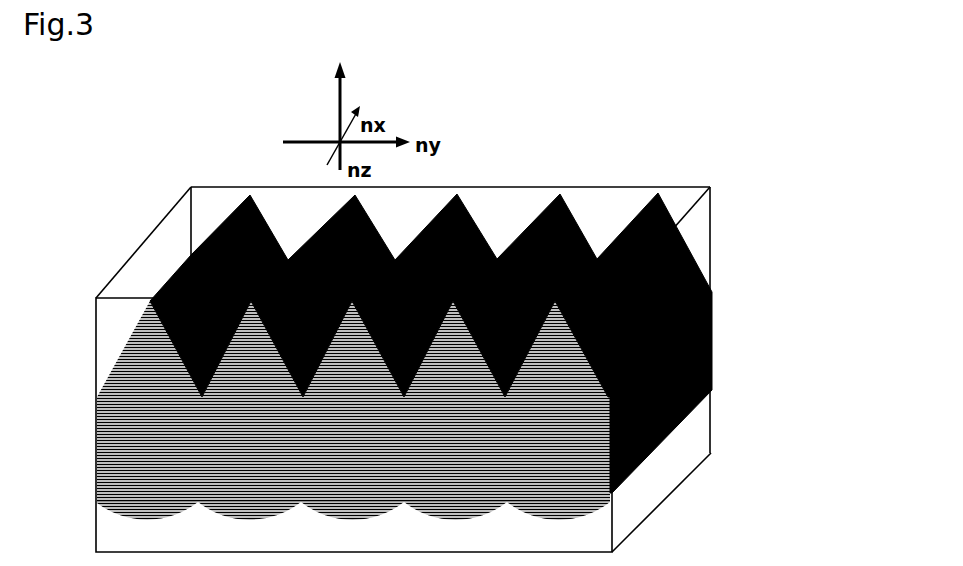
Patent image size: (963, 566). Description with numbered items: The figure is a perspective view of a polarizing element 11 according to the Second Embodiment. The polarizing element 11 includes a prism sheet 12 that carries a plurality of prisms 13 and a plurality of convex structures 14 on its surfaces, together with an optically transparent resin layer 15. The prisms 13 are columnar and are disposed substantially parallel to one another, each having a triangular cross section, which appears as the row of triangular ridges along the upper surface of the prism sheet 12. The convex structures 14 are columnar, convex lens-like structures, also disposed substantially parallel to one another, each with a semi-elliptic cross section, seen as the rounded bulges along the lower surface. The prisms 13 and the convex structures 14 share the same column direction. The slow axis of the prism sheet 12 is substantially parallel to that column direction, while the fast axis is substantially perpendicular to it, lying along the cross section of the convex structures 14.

The polarizing element 11 is at (689, 168).
The prism sheet 12 is at (712, 350).
The prisms 13 is at (705, 273).
The convex structures 14 is at (610, 493).
The optically transparent resin layer 15 is at (700, 215).